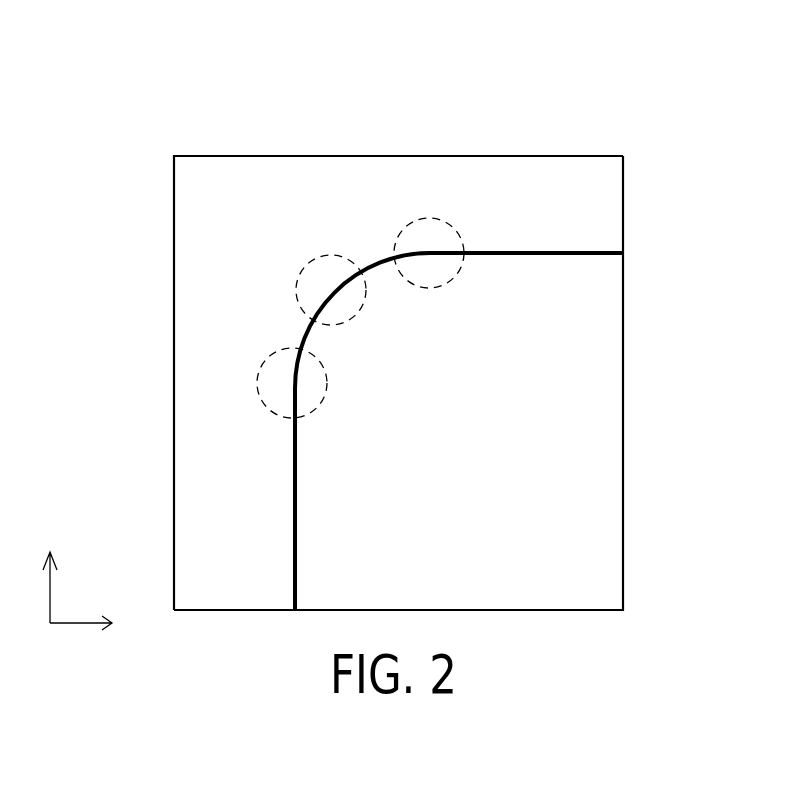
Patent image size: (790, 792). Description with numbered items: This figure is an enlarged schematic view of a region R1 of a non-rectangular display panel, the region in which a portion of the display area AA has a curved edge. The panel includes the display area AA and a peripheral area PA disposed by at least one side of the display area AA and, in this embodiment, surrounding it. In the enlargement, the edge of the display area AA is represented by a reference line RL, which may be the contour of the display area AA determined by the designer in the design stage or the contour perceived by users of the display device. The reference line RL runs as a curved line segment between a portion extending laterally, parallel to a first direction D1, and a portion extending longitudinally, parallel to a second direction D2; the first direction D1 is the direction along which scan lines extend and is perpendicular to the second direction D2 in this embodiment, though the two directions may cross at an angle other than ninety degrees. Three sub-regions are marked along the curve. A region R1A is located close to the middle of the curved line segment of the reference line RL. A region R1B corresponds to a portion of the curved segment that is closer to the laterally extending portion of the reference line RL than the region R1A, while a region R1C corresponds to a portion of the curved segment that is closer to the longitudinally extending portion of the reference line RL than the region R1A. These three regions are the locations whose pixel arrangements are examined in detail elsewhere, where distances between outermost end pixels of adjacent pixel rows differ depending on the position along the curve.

The peripheral area PA is at (332, 180).
The display area AA is at (603, 416).
The region R1 is at (597, 96).
The reference line RL is at (588, 254).
The region R1A is at (310, 262).
The region R1B is at (428, 217).
The region R1C is at (260, 370).
The first direction D1 is at (99, 624).
The second direction D2 is at (49, 571).